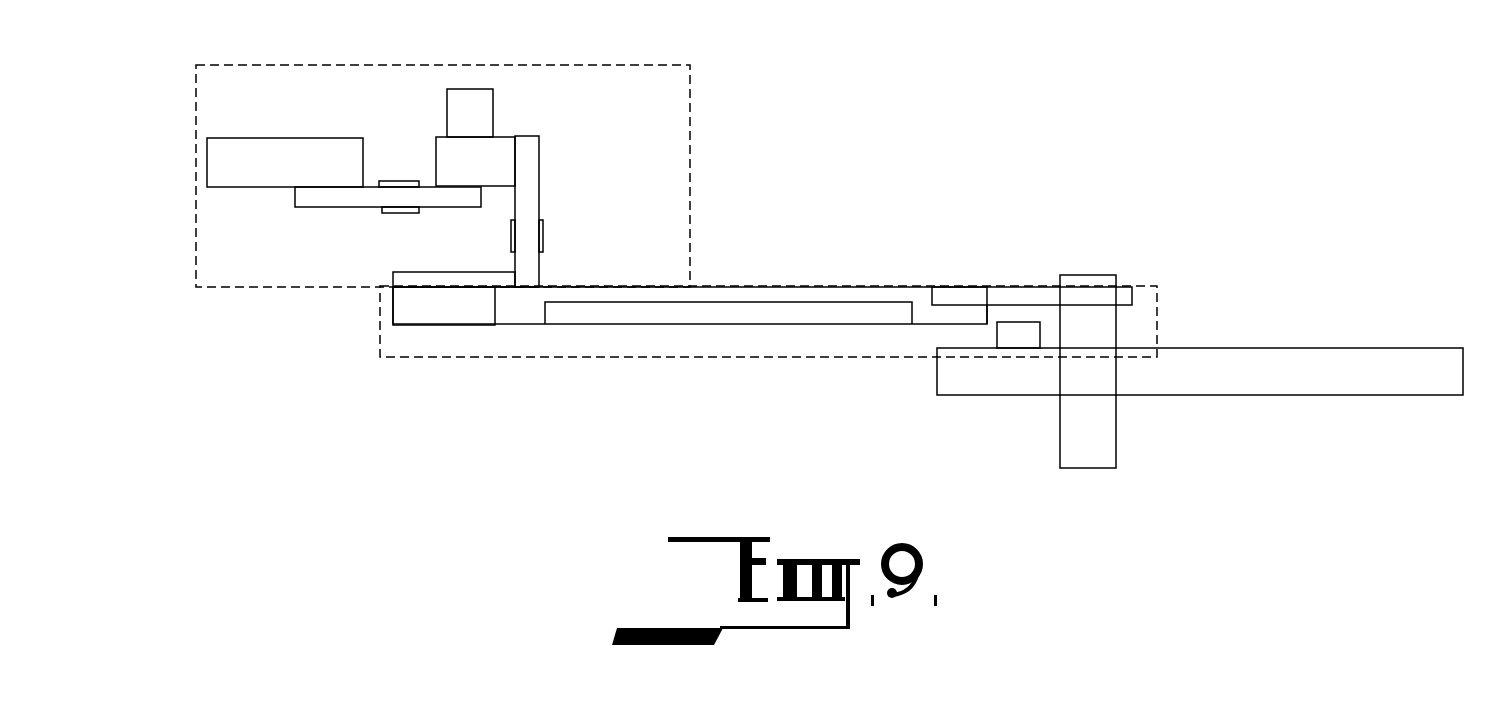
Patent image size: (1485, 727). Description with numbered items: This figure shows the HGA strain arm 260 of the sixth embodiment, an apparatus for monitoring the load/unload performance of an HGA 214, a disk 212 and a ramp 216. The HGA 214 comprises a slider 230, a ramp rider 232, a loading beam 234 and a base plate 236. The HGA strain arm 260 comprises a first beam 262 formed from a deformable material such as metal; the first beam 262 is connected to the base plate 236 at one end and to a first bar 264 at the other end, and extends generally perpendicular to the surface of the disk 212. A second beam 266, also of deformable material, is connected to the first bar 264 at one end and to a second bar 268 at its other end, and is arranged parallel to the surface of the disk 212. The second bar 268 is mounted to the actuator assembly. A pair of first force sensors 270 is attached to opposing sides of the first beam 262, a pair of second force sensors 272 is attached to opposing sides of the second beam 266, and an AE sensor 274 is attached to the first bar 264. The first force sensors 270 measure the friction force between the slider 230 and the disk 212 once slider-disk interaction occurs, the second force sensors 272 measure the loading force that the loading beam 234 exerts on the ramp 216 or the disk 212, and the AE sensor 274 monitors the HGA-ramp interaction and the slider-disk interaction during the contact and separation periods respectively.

The disk 212 is at (1317, 363).
The HGA 214 is at (758, 283).
The ramp 216 is at (1107, 437).
The slider 230 is at (1013, 355).
The ramp rider 232 is at (1008, 285).
The loading beam 234 is at (727, 323).
The base plate 236 is at (457, 325).
The HGA strain arm 260 is at (297, 290).
The first beam 262 is at (523, 152).
The first bar 264 is at (503, 153).
The second beam 266 is at (323, 197).
The second bar 268 is at (333, 145).
The first force sensors 270 is at (517, 243).
The second force sensors 272 is at (407, 207).
The AE sensor 274 is at (473, 103).